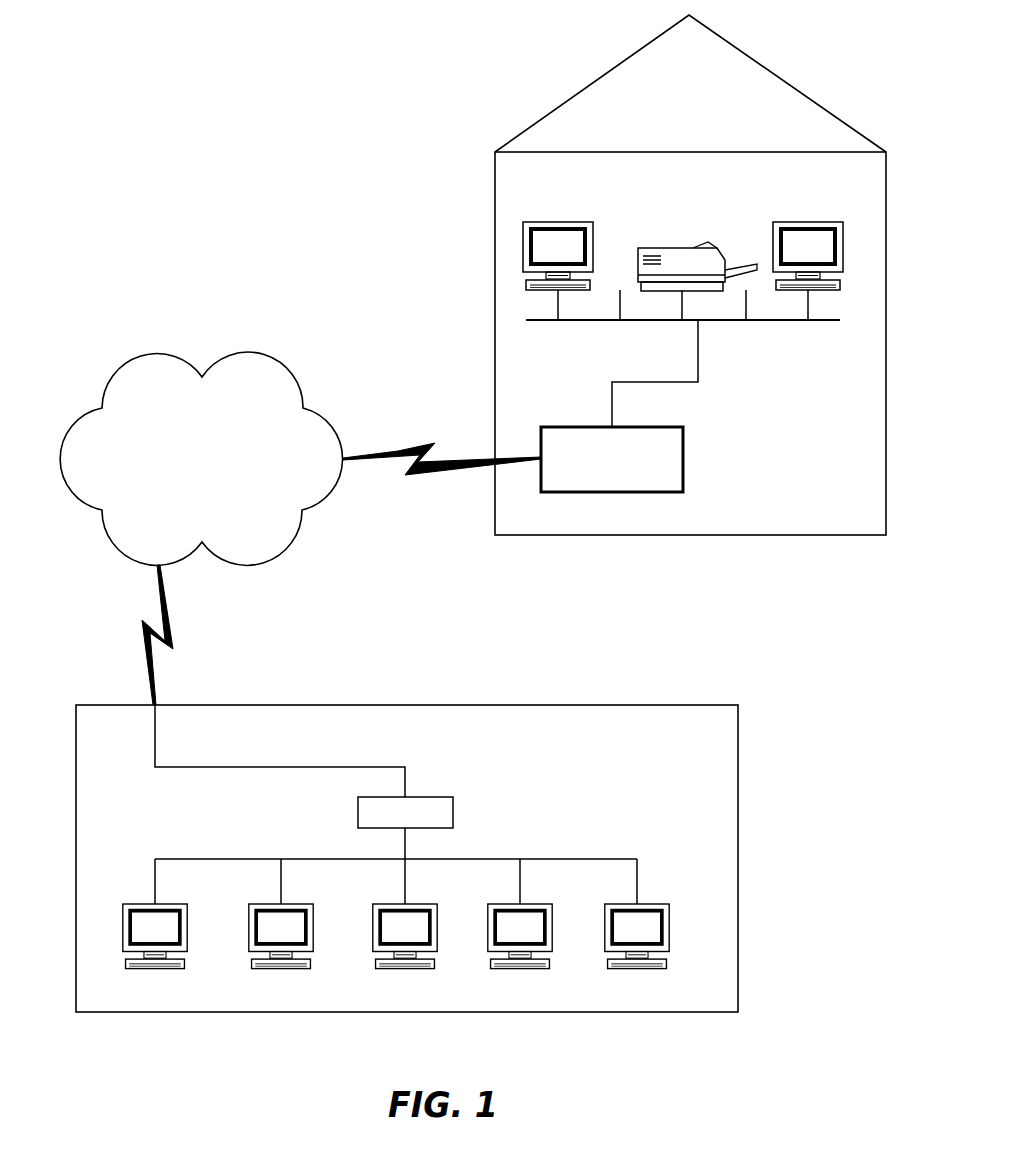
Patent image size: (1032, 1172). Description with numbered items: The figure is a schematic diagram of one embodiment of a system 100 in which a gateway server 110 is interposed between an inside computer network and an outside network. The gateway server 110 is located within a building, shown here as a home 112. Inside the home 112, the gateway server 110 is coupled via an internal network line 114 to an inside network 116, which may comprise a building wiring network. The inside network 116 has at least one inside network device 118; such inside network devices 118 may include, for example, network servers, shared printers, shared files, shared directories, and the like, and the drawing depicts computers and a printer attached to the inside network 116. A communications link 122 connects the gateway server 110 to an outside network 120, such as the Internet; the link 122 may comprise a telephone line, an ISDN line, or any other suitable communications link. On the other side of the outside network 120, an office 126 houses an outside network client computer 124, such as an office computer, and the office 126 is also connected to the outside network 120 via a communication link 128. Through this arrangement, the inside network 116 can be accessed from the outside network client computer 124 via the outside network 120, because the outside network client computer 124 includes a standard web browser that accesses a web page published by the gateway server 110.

The system 100 is at (238, 130).
The gateway server 110 is at (683, 458).
The home 112 is at (778, 74).
The internal network line 114 is at (698, 352).
The inside network 116 is at (587, 320).
The inside network device 118 is at (643, 248).
The outside network 120 is at (243, 355).
The communications link 122 is at (390, 455).
The outside network client computer 124 is at (668, 934).
The office 126 is at (467, 705).
The wireless link between network and office 128 is at (172, 637).